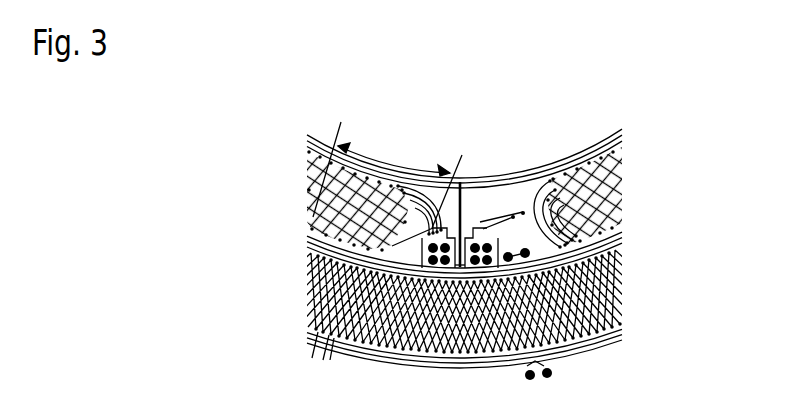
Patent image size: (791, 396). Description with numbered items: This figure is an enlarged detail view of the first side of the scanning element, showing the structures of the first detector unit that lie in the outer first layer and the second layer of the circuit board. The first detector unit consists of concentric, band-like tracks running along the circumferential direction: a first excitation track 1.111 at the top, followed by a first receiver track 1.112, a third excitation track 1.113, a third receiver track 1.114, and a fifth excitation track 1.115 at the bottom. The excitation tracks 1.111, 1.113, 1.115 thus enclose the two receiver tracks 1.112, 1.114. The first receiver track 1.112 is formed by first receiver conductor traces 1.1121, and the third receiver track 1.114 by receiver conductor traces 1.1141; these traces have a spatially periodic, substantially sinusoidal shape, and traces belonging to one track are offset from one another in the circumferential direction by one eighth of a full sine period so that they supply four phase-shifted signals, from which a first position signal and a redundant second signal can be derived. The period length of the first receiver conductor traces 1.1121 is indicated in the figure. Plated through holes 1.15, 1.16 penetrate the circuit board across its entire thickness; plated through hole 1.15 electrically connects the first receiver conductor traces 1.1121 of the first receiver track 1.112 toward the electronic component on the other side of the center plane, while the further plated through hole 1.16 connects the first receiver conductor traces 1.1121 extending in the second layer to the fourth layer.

The first excitation track 1.111 is at (307, 136).
The first receiver track 1.112 is at (307, 186).
The first receiver conductor traces 1.1121 is at (528, 205).
The third excitation track 1.113 is at (307, 237).
The third receiver track 1.114 is at (307, 287).
The receiver conductor traces 1.1141 is at (622, 258).
The fifth excitation track 1.115 is at (307, 337).
The plated through hole 1.15 is at (488, 242).
The plated through hole 1.16 is at (495, 242).